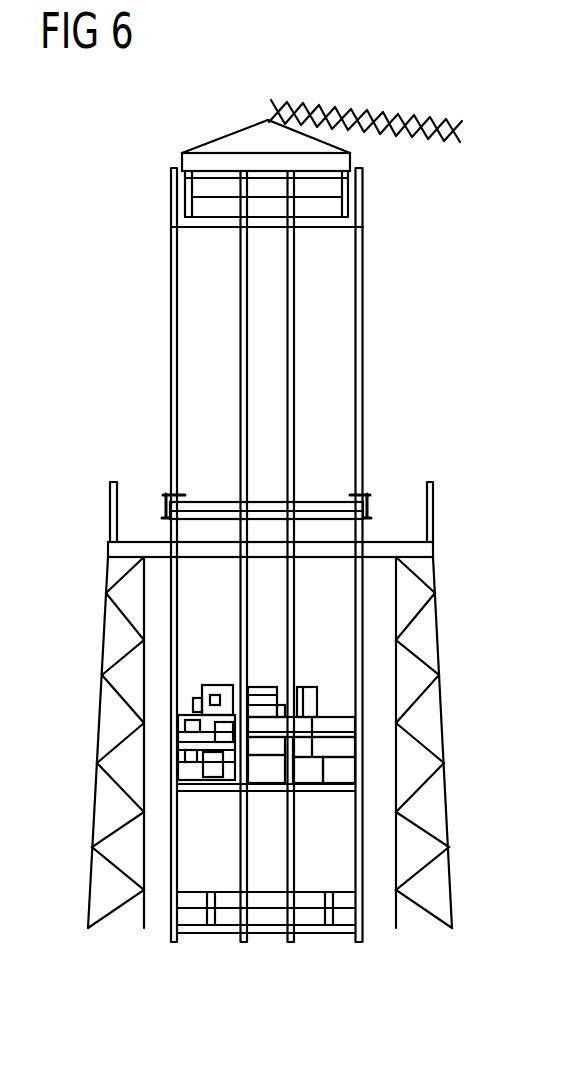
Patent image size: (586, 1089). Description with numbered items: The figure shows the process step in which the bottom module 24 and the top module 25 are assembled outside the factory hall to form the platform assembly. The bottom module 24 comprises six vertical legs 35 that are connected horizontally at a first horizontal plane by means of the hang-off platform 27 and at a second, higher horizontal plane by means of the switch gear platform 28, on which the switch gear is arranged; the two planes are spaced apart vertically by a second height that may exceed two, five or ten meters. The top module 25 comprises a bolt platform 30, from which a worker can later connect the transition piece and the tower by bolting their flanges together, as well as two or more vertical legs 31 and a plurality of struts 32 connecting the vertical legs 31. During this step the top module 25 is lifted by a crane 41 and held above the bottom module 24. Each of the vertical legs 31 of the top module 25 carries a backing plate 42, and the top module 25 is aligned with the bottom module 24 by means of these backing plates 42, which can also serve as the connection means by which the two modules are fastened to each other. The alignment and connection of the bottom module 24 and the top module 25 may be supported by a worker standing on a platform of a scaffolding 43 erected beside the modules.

The bottom module 24 is at (236, 705).
The top module 25 is at (216, 531).
The hang-off platform 27 is at (266, 957).
The switch gear platform 28 is at (337, 743).
The bolt platform 30 is at (301, 205).
The vertical legs 31 is at (265, 345).
The struts 32 is at (285, 452).
The vertical legs 35 is at (268, 731).
The crane 41 is at (365, 81).
The backing plate 42 is at (267, 476).
The scaffolding 43 is at (462, 742).